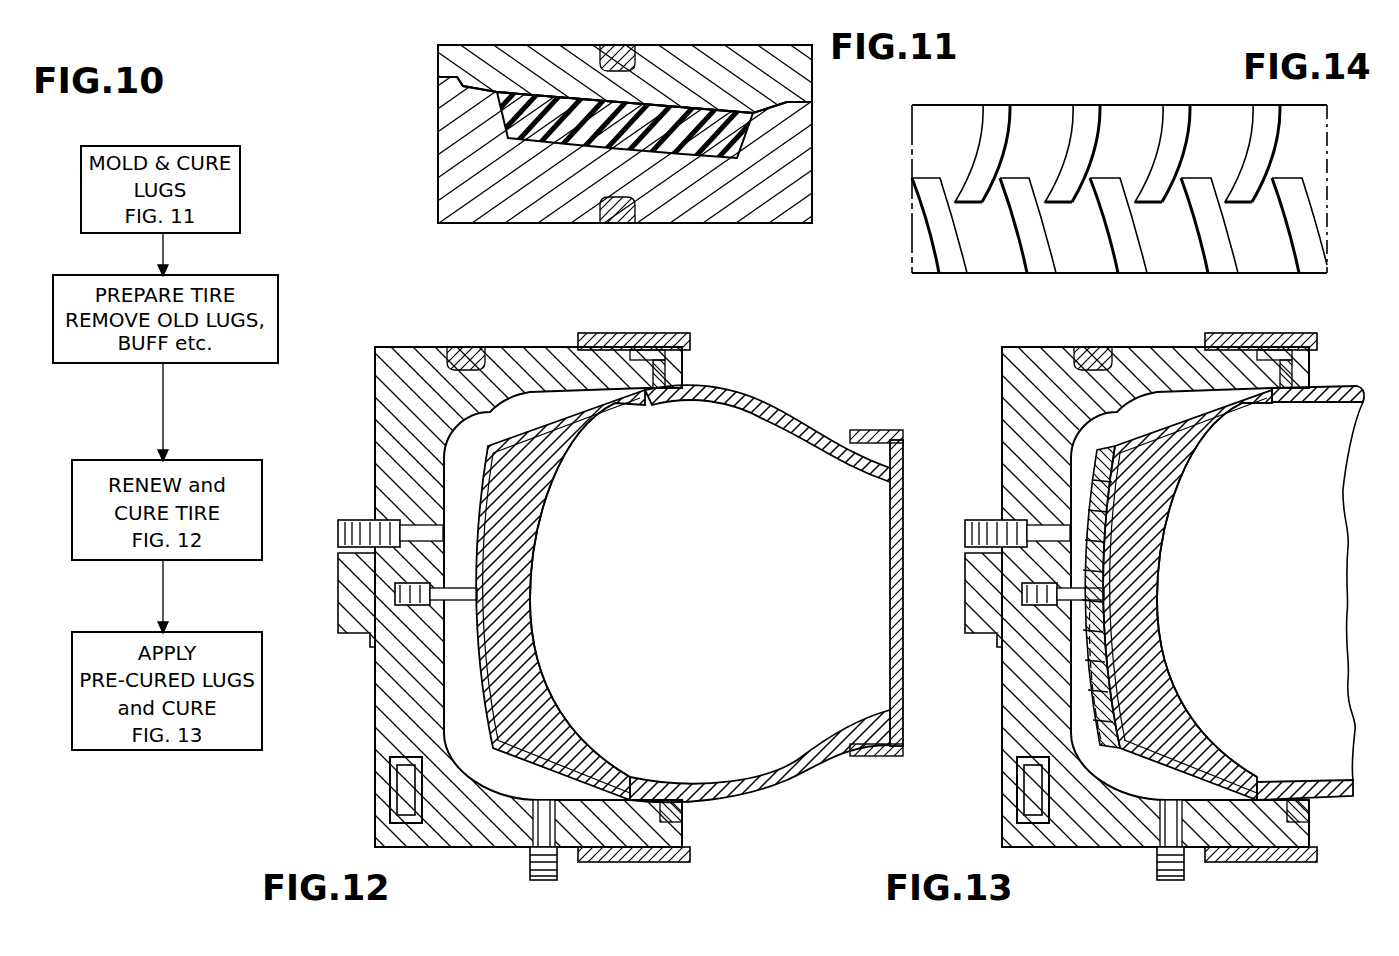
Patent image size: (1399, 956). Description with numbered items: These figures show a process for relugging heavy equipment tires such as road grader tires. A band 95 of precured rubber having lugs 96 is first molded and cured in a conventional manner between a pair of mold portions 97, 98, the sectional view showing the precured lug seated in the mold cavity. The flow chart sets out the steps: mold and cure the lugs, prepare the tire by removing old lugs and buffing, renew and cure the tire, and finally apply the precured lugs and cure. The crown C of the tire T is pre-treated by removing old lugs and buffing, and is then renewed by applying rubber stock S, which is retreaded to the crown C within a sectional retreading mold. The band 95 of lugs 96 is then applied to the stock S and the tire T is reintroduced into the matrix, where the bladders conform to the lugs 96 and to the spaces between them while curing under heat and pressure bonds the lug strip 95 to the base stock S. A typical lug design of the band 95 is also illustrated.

In FIG. 14, the band 95 is at (1053, 118).
In FIG. 14, the lugs 96 is at (1028, 237).
In FIG. 13, the lugs 96 is at (1108, 493).
In FIG. 11, the mold portion 97 is at (797, 68).
In FIG. 11, the mold portion 98 is at (787, 143).
In FIG. 12, the tire T is at (780, 398).
In FIG. 13, the tire T is at (1349, 386).
In FIG. 12, the rubber stock S is at (497, 563).
In FIG. 13, the rubber stock S is at (1137, 497).
In FIG. 12, the crown C is at (515, 618).
In FIG. 13, the crown C is at (1145, 605).